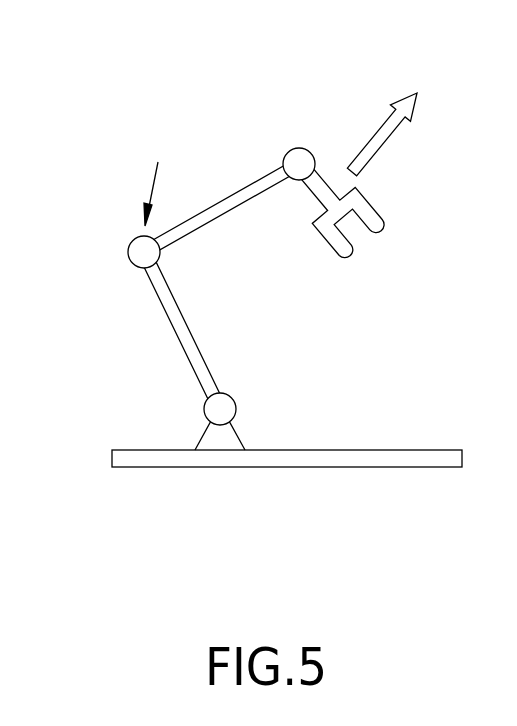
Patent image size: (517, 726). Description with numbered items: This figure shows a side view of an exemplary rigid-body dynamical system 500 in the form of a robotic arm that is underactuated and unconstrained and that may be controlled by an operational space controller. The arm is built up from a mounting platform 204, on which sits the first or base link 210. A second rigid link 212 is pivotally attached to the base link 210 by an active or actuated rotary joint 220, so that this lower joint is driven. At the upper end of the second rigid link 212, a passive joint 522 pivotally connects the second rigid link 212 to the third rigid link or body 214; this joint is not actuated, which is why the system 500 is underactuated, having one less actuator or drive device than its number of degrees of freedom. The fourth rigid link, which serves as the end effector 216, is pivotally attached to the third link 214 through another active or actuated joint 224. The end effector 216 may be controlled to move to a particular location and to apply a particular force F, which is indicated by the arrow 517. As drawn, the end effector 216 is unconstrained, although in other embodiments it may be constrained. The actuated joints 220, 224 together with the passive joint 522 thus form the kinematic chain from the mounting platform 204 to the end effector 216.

The rigid-body dynamical system 500 is at (80, 88).
The passive joint 522 is at (128, 252).
The third rigid link 214 is at (245, 180).
The actuated joint 224 is at (300, 148).
The end effector 216 is at (314, 200).
The arrow 517 is at (387, 148).
The second rigid link 212 is at (192, 326).
The actuated rotary joint 220 is at (238, 400).
The base link 210 is at (240, 439).
The mounting platform 204 is at (283, 467).